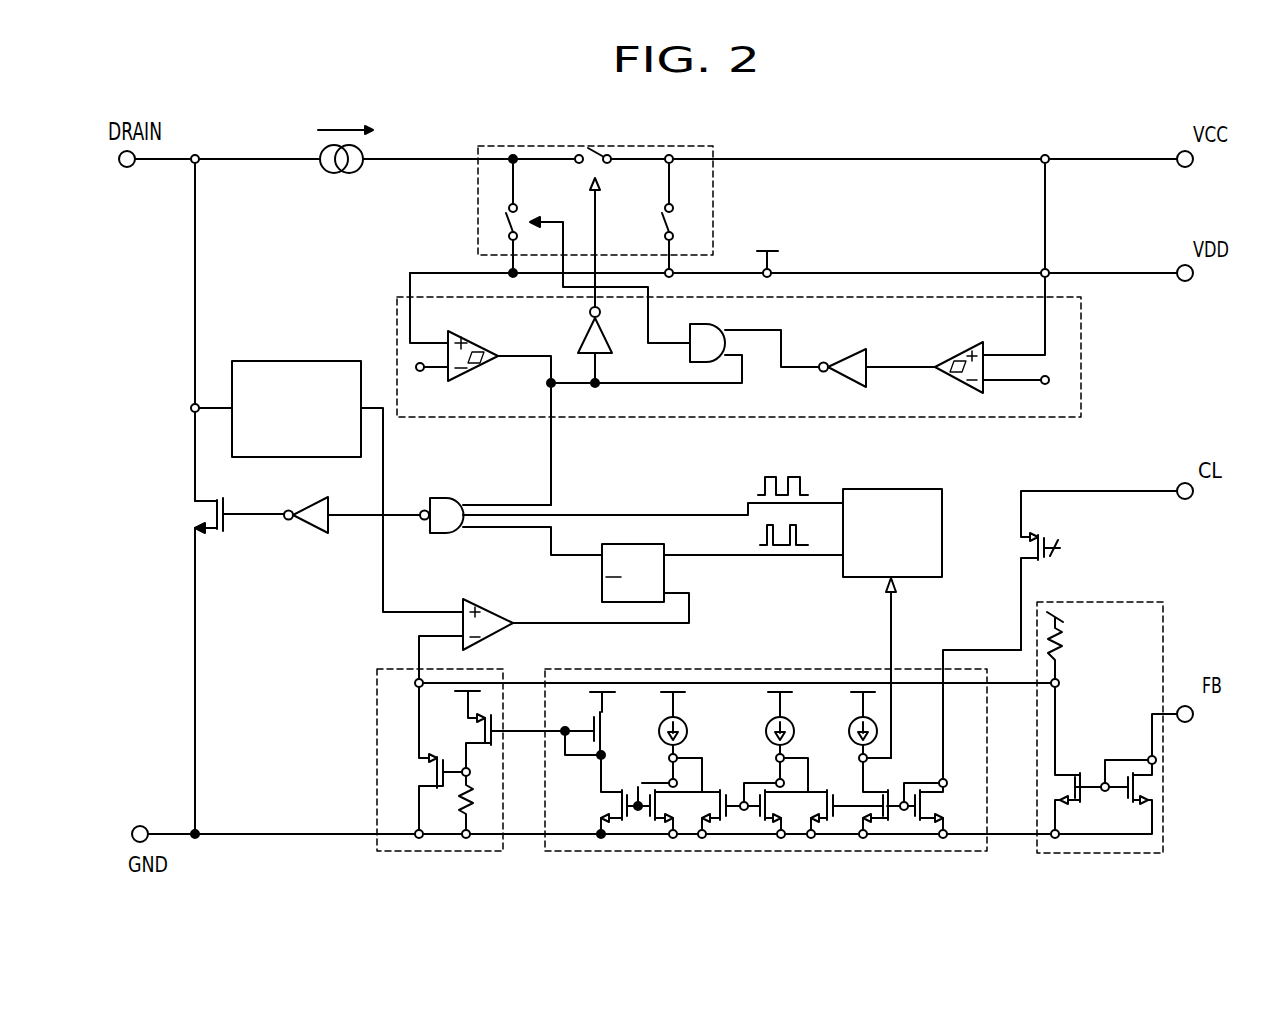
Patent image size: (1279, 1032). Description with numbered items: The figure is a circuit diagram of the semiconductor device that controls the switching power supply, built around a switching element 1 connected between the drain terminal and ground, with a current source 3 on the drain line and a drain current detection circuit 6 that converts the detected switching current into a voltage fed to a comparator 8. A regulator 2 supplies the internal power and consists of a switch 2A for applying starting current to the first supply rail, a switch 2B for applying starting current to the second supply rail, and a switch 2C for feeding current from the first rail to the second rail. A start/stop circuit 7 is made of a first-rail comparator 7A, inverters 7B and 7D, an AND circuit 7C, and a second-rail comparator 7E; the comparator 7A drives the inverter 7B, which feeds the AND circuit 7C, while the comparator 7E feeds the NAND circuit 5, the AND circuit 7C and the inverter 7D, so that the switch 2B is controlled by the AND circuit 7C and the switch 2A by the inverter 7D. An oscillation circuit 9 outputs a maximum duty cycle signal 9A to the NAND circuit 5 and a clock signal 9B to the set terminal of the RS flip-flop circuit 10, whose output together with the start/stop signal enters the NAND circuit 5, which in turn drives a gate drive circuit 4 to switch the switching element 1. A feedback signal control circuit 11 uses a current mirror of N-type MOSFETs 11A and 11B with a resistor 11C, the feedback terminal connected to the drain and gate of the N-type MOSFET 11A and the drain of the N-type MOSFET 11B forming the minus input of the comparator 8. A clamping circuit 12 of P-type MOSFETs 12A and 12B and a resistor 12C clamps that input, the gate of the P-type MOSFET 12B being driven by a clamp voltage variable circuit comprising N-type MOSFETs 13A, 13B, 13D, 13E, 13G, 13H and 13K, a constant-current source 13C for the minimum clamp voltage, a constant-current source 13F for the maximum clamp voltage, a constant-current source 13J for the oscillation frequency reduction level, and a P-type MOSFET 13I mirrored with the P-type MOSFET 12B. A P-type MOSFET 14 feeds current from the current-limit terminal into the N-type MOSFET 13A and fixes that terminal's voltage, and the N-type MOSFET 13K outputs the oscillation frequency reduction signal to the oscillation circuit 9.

The switching element 1 is at (207, 517).
The regulator 2 is at (523, 145).
The switch 2A is at (598, 152).
The switch 2B is at (505, 228).
The switch 2C is at (672, 223).
The current source 3 is at (337, 174).
The gate drive circuit 4 is at (313, 529).
The NAND circuit 5 is at (436, 498).
The drain current detection circuit 6 is at (262, 360).
The start/stop circuit 7 is at (1081, 351).
The VCC comparator 7A is at (962, 346).
The inverter 7B is at (849, 353).
The AND circuit 7C is at (700, 362).
The inverter 7D is at (582, 337).
The VDD comparator 7E is at (446, 351).
The comparator 8 is at (463, 605).
The oscillation circuit 9 is at (843, 568).
The maximum duty cycle signal 9A is at (760, 478).
The clock signal 9B is at (762, 530).
The RS flip-flop circuit 10 is at (665, 570).
The feedback signal control circuit 11 is at (1163, 645).
The N-type MOSFET 11A is at (1138, 790).
The N-type MOSFET 11B is at (1068, 775).
The resistor 11C is at (1063, 643).
The clamping circuit 12 is at (410, 853).
The P-type MOSFET 12A is at (433, 772).
The P-type MOSFET 12B is at (486, 731).
The resistor 12C is at (464, 812).
The N-type MOSFET 13A is at (927, 838).
The N-type MOSFET 13B is at (826, 838).
The constant-current source 13C is at (794, 733).
The N-type MOSFET 13D is at (767, 838).
The N-type MOSFET 13E is at (717, 838).
The constant-current source 13F is at (688, 732).
The N-type MOSFET 13G is at (659, 838).
The N-type MOSFET 13H is at (620, 806).
The P-type MOSFET 13I is at (588, 716).
The constant-current source 13J is at (877, 733).
The N-type MOSFET 13K is at (878, 838).
The P-type MOSFET 14 is at (1046, 541).